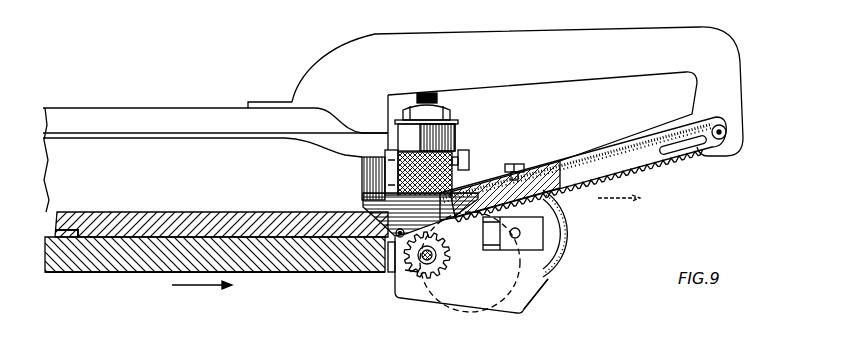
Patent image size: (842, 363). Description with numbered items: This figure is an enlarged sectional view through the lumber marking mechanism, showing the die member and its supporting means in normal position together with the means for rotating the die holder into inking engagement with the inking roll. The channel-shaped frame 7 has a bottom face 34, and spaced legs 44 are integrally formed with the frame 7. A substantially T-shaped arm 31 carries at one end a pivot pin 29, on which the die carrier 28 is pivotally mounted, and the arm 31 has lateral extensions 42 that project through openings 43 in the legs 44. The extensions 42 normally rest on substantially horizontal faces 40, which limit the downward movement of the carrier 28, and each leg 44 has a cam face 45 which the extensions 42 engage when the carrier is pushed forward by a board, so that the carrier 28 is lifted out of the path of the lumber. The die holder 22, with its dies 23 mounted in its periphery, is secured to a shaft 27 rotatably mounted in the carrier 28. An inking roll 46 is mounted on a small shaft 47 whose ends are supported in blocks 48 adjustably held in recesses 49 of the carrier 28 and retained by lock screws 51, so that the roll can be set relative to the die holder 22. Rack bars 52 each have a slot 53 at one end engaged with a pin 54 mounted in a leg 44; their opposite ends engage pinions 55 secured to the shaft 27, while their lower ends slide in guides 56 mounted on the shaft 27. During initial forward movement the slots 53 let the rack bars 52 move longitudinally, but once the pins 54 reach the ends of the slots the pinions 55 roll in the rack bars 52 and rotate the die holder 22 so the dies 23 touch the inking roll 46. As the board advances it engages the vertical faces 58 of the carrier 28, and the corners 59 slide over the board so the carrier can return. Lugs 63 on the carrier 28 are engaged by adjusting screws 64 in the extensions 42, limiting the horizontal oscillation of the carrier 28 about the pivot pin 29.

The channel-shaped frame 7 is at (70, 152).
The T-shaped arm 31 is at (150, 118).
The bottom face 34 is at (137, 238).
The openings 43 is at (540, 92).
The legs 44 is at (710, 46).
The pivot pin 29 is at (428, 93).
The lateral extensions 42 is at (375, 178).
The horizontal faces 40 is at (462, 192).
The adjusting screws 64 is at (392, 150).
The lugs 63 is at (372, 165).
The guides 56 is at (372, 197).
The lock screws 51 is at (516, 165).
The cam face 45 is at (640, 130).
The rack bars 52 is at (598, 166).
The slot 53 is at (698, 152).
The pin 54 is at (727, 132).
The inking roll 46 is at (569, 253).
The vertical faces 58 is at (397, 296).
The dies 23 is at (388, 255).
The die holder 22 is at (453, 308).
The shaft 27 is at (430, 262).
The pinions 55 is at (423, 260).
The corners 59 is at (418, 272).
The blocks 48 is at (507, 244).
The shaft 47 is at (516, 238).
The recesses 49 is at (493, 248).
The die carrier 28 is at (534, 276).